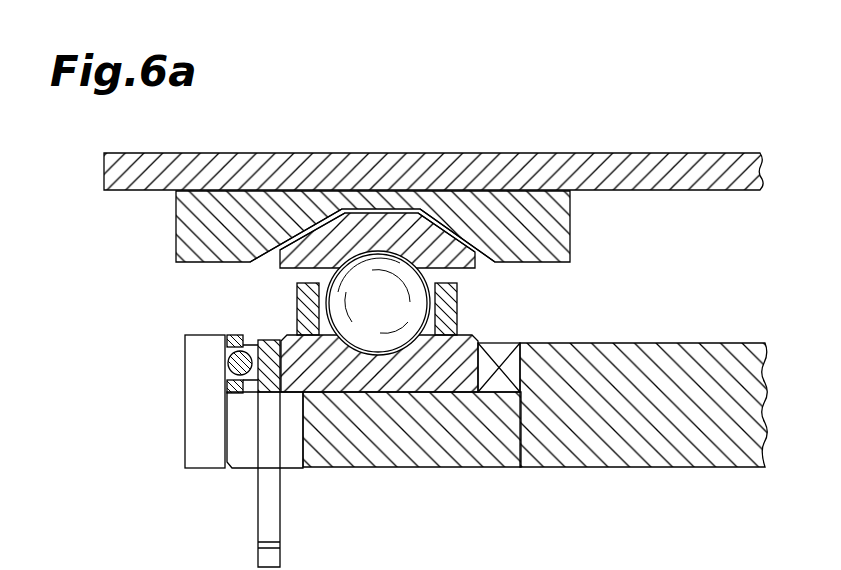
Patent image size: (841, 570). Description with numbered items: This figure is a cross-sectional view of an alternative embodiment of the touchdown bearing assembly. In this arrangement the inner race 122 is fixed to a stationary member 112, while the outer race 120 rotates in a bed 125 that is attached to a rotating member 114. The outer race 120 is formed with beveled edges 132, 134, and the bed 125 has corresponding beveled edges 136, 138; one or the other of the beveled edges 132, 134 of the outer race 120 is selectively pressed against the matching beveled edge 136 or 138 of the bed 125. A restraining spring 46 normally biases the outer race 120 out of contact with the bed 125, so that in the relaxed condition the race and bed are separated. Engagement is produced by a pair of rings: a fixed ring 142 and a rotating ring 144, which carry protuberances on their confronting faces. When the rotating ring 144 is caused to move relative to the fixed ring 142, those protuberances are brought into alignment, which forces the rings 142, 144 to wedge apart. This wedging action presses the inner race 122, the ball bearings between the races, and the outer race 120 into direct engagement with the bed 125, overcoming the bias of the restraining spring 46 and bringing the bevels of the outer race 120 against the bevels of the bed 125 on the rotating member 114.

The rotating member 114 is at (673, 153).
The bed 125 is at (533, 213).
The outer race 120 is at (383, 222).
The beveled edge of the bed 136 is at (320, 205).
The beveled edge of the bed 138 is at (448, 227).
The beveled edge of the outer race 132 is at (300, 240).
The beveled edge of the outer race 134 is at (458, 238).
The inner race 122 is at (422, 370).
The restraining spring 46 is at (502, 385).
The stationary member 112 is at (737, 457).
The fixed ring 142 is at (182, 382).
The rotating ring 144 is at (300, 390).